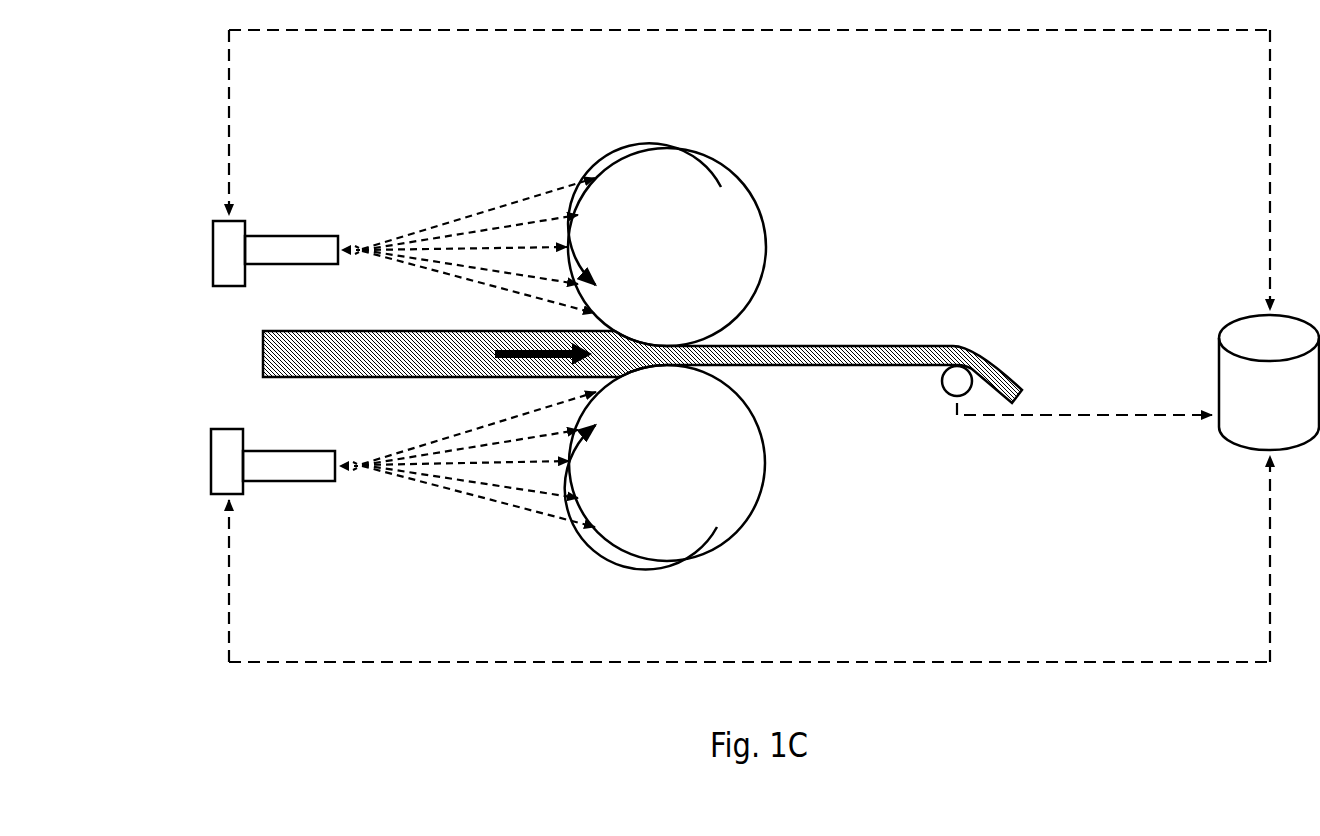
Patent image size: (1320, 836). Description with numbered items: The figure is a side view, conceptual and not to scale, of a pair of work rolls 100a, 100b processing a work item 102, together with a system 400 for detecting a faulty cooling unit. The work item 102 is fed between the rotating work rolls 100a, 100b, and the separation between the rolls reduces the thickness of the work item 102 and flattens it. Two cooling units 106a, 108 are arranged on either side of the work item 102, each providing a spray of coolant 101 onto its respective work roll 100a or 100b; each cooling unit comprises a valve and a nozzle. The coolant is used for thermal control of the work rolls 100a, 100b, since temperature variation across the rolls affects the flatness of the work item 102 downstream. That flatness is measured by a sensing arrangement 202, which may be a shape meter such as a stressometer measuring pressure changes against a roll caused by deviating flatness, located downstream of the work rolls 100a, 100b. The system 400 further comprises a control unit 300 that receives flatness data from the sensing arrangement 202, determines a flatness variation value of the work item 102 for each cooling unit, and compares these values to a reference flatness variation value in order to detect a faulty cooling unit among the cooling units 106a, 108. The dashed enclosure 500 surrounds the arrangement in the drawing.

The web inspection system 500 is at (307, 117).
The cooling unit 106a is at (225, 198).
The cooling unit 108 is at (219, 512).
The spray of coolant 101 is at (473, 205).
The work item 102 is at (260, 355).
The work roll 100a is at (644, 148).
The work roll 100b is at (752, 534).
The sensing arrangement 202 is at (938, 381).
The system 400 is at (1088, 226).
The control unit 300 is at (1220, 310).